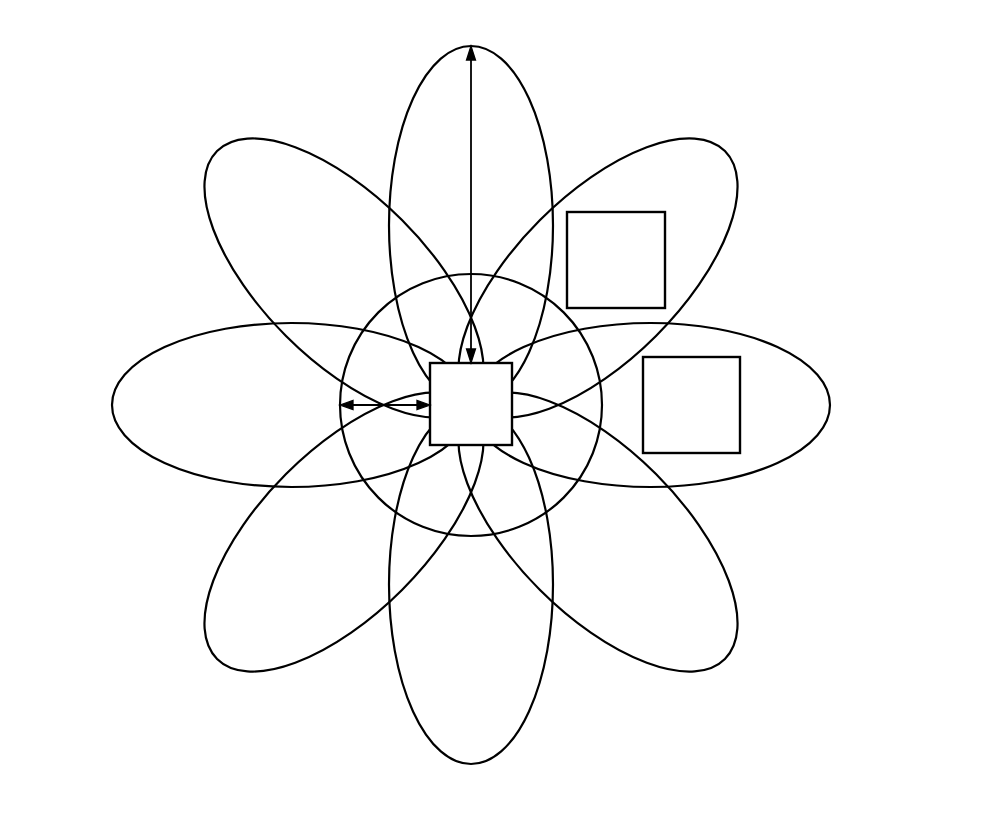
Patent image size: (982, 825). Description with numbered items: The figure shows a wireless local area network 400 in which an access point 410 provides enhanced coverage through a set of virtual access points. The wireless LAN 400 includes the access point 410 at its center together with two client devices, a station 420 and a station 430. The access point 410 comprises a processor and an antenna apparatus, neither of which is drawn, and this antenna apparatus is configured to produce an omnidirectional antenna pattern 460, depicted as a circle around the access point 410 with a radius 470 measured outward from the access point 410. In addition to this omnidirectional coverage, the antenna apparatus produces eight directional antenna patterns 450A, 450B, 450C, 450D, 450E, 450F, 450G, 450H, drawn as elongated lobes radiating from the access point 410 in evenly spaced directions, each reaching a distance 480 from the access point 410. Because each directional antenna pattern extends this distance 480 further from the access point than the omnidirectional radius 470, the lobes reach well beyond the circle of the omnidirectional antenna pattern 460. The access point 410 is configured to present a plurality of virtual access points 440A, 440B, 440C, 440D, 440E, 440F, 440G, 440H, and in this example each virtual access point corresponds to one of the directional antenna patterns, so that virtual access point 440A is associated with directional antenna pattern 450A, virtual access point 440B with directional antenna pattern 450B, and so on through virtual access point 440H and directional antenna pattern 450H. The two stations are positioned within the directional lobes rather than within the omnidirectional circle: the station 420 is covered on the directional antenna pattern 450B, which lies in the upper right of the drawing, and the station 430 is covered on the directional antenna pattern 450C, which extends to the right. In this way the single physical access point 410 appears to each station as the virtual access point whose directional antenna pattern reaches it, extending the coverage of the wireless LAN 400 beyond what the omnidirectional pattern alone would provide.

The wireless local area network 400 is at (81, 150).
The access point 410 is at (456, 426).
The station 420 is at (601, 281).
The station 430 is at (676, 425).
The virtual access point 440A is at (492, 225).
The virtual access point 440B is at (608, 278).
The virtual access point 440C is at (685, 405).
The virtual access point 440D is at (610, 532).
The virtual access point 440E is at (496, 584).
The virtual access point 440F is at (332, 532).
The virtual access point 440G is at (256, 405).
The virtual access point 440H is at (334, 278).
The directional antenna pattern 450A is at (522, 84).
The directional antenna pattern 450B is at (738, 200).
The directional antenna pattern 450C is at (830, 400).
The directional antenna pattern 450D is at (738, 607).
The directional antenna pattern 450E is at (540, 690).
The directional antenna pattern 450F is at (205, 615).
The directional antenna pattern 450G is at (112, 400).
The directional antenna pattern 450H is at (204, 200).
The omnidirectional antenna pattern 460 is at (348, 450).
The radius 470 is at (405, 400).
The distance 480 is at (471, 168).